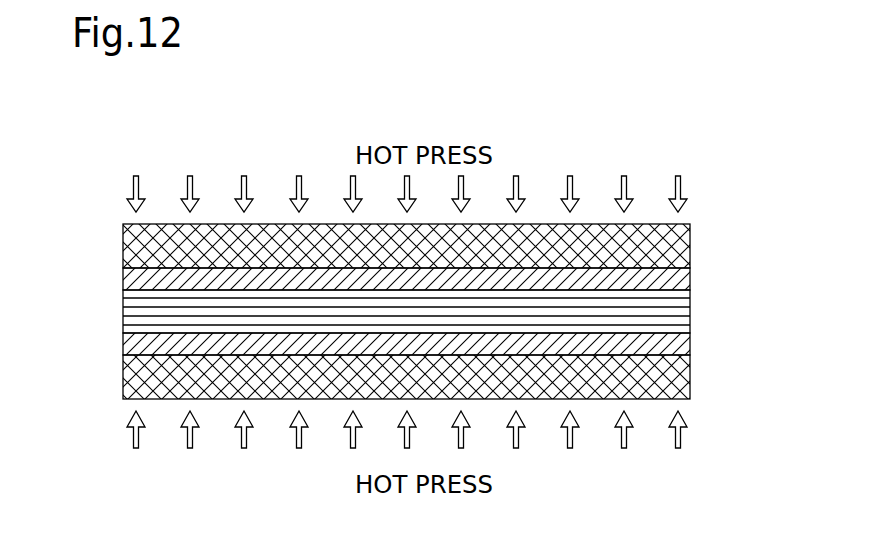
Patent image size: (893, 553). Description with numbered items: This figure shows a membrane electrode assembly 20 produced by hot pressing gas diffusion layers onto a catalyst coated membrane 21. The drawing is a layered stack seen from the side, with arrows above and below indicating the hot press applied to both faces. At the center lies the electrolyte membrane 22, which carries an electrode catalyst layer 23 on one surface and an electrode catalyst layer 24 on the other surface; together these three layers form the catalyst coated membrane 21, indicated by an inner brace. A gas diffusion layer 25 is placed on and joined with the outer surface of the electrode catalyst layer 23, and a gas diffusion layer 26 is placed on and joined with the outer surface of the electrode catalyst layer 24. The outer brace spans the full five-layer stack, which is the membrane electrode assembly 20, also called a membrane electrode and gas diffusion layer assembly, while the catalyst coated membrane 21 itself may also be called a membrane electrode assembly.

The membrane electrode assembly 20 is at (78, 225).
The catalyst coated membrane 21 is at (123, 268).
The electrolyte membrane 22 is at (691, 316).
The electrode catalyst layer 23 is at (691, 283).
The electrode catalyst layer 24 is at (691, 348).
The gas diffusion layer 25 is at (691, 251).
The gas diffusion layer 26 is at (691, 380).